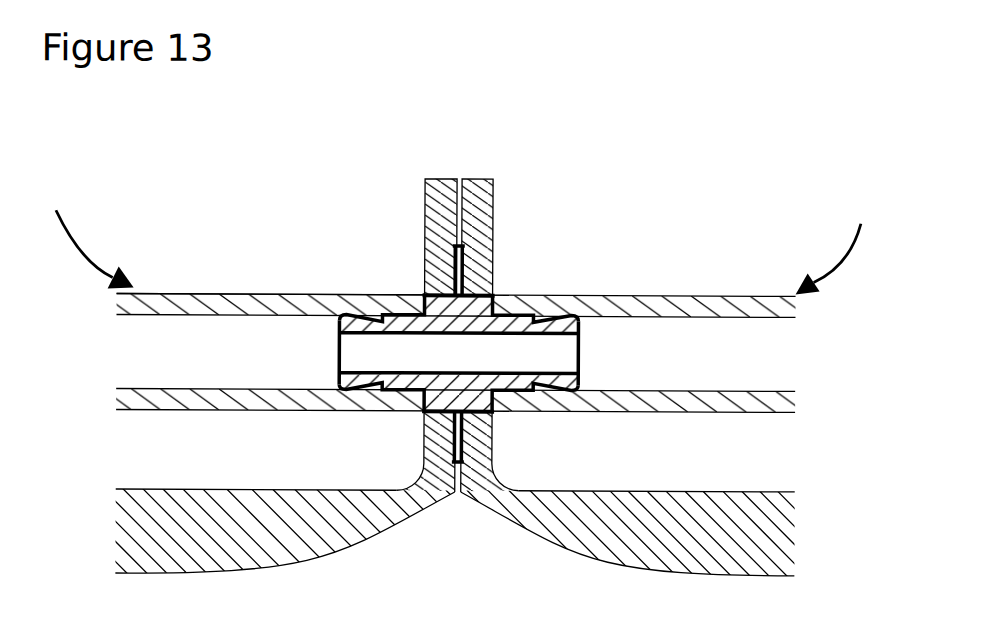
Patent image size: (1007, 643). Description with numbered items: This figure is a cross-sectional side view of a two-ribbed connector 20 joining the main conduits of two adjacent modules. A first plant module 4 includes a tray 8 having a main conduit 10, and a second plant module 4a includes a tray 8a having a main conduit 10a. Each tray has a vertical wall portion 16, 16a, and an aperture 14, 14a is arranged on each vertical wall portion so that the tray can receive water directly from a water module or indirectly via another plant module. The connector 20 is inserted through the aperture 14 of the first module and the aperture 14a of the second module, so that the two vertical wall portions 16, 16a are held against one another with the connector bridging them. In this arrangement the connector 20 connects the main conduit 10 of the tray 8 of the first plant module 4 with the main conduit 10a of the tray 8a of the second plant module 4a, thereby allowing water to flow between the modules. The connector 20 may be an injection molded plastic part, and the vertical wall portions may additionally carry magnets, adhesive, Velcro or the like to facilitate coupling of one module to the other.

The tray 8 is at (580, 550).
The tray 8a is at (343, 550).
The main conduit 10 is at (713, 297).
The main conduit 10a is at (220, 297).
The aperture 14 is at (492, 293).
The aperture 14a is at (422, 293).
The vertical wall portion 16 is at (492, 217).
The vertical wall portion 16a is at (425, 218).
The two-ribbed connector 20 is at (505, 318).
The plant module 4 is at (870, 221).
The plant module 4a is at (76, 212).